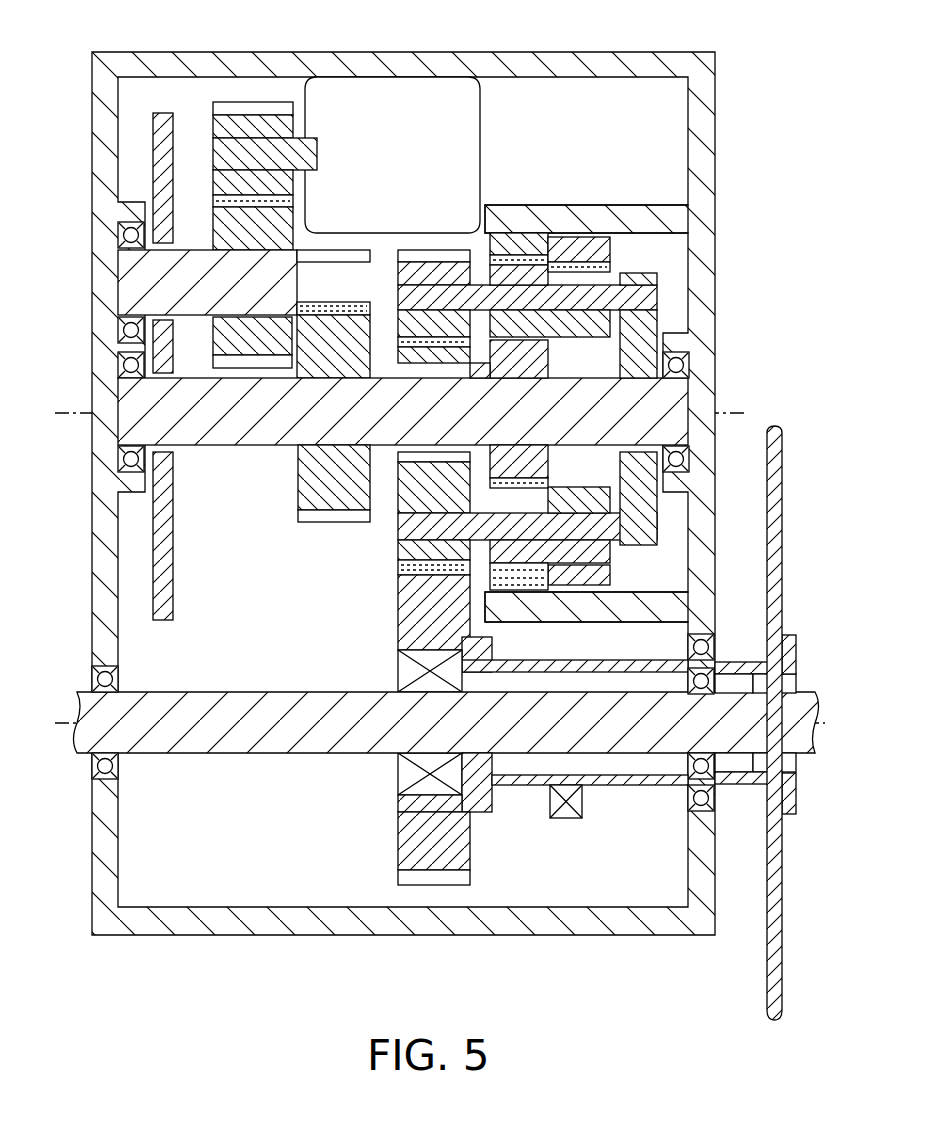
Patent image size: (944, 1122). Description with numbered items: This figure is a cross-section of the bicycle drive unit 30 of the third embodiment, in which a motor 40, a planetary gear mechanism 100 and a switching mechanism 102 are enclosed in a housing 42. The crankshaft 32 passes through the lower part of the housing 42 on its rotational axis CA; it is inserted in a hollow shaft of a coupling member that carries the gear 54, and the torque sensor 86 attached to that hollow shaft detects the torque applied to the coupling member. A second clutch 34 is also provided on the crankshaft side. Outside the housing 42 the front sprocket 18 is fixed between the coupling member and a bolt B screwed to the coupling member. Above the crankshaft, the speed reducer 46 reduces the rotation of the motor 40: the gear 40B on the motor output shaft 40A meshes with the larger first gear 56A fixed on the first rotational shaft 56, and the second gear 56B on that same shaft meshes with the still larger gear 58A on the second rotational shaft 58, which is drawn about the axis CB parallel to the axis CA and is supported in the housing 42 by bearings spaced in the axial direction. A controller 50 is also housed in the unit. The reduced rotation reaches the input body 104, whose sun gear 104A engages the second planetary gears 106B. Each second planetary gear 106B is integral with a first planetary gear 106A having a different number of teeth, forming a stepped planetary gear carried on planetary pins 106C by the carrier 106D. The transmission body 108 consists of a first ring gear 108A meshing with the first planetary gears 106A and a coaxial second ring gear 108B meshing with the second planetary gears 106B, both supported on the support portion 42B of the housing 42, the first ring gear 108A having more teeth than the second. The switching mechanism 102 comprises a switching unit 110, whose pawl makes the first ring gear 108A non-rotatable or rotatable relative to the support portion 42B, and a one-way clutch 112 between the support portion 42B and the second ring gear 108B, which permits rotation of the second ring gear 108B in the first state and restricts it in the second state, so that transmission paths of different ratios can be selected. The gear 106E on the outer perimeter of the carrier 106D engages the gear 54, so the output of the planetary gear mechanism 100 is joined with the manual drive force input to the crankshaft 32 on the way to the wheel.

The drive unit 30 is at (769, 32).
The housing 42 is at (715, 122).
The support portion 42B is at (586, 625).
The motor 40 is at (470, 113).
The output shaft 40A is at (306, 138).
The gear 40B is at (213, 110).
The speed reducer 46 is at (205, 227).
The controller 50 is at (175, 530).
The gear 54 is at (398, 878).
The first rotational shaft 56 is at (207, 311).
The first gear 56A is at (293, 196).
The second gear 56B is at (340, 250).
The second rotational shaft 58 is at (222, 447).
The gear 58A is at (298, 524).
The planetary gear mechanism 100 is at (566, 165).
The switching mechanism 102 is at (630, 246).
The input body 104 is at (548, 358).
The sun gear 104A is at (480, 379).
The first planetary gears 106A is at (612, 262).
The second planetary gears 106B is at (488, 242).
The planetary pins 106C is at (398, 296).
The carrier 106D is at (397, 508).
The gear 106E is at (397, 598).
The transmission body 108 is at (398, 580).
The first ring gear 108A is at (585, 236).
The second ring gear 108B is at (510, 232).
The switching unit 110 is at (580, 588).
The one-way clutch 112 is at (523, 592).
The second clutch 34 is at (398, 668).
The torque sensor 86 is at (566, 820).
The crankshaft 32 is at (800, 745).
The front sprocket 18 is at (783, 488).
The bolt B is at (796, 636).
The rotational axis CA is at (78, 742).
The motor axis CB is at (78, 420).